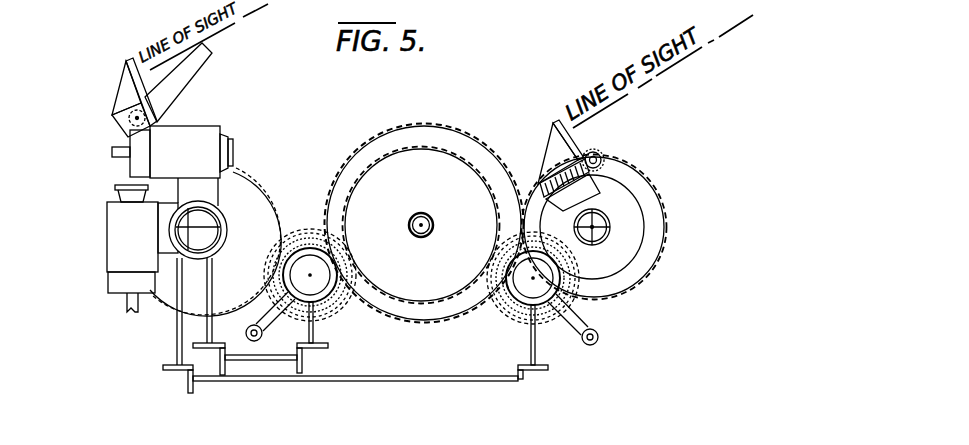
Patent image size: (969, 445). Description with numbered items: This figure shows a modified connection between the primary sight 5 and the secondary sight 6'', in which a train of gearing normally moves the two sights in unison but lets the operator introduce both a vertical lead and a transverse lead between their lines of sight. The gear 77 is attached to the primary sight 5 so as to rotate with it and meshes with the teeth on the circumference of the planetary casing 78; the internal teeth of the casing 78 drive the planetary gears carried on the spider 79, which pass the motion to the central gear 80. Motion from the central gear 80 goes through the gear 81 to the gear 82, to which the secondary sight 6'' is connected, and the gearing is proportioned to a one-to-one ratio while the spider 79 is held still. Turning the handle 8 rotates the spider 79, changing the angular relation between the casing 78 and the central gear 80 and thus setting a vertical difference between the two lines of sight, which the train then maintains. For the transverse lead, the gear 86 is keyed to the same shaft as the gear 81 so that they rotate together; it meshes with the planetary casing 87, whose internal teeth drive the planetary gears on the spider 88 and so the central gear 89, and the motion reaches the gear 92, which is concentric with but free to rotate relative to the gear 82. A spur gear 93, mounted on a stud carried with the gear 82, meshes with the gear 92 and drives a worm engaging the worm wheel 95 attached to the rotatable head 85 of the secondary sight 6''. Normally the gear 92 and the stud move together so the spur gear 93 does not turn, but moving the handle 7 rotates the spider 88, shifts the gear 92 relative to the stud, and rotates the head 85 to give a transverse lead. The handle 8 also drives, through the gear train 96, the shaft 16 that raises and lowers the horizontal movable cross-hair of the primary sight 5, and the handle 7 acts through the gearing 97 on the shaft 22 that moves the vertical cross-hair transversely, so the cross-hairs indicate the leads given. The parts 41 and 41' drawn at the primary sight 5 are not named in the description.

The primary sight 5 is at (125, 85).
The camera body 41' is at (172, 131).
The camera mount module 41 is at (110, 248).
The gear 77 is at (245, 187).
The planetary casing 78 is at (277, 243).
The spider 79 is at (295, 247).
The central gear 80 is at (313, 258).
The handle 8 is at (258, 341).
The gear 81 is at (424, 132).
The gear 86 is at (445, 167).
The gear 82 is at (634, 184).
The gear 92 is at (632, 255).
The secondary sight 6'' is at (646, 214).
The head of the sight 85 is at (541, 162).
The worm wheel 95 is at (540, 190).
The spur gear 93 is at (598, 150).
The planetary casing 87 is at (500, 306).
The spider 88 is at (508, 302).
The central gear 89 is at (519, 301).
The handle 7 is at (599, 338).
The shaft 22 is at (178, 318).
The shaft 16 is at (209, 327).
The gearing 97 is at (186, 376).
The gear train 96 is at (216, 358).